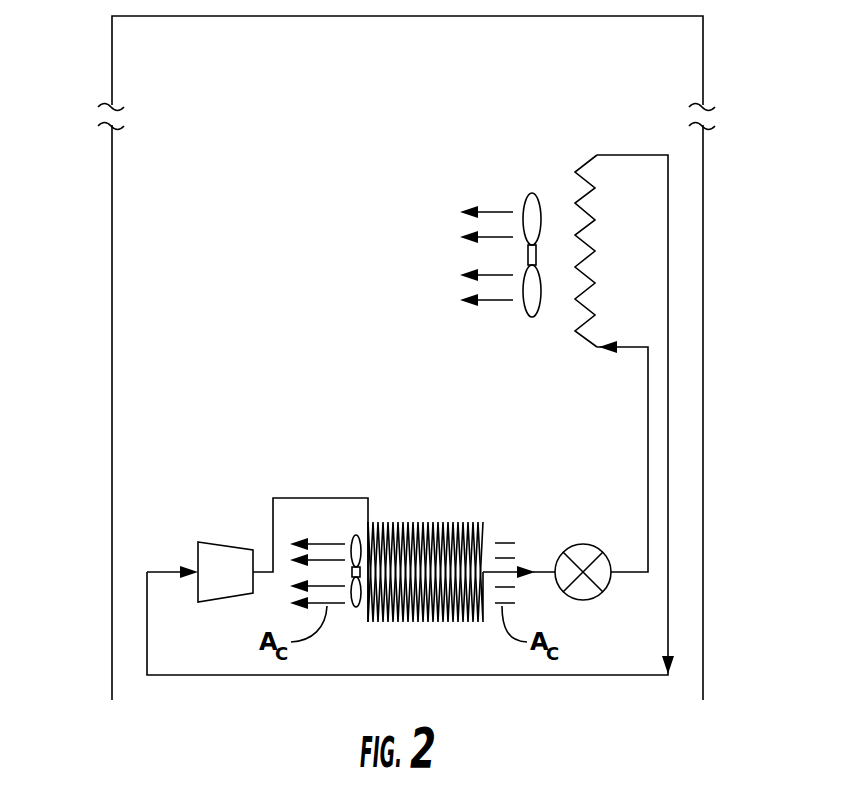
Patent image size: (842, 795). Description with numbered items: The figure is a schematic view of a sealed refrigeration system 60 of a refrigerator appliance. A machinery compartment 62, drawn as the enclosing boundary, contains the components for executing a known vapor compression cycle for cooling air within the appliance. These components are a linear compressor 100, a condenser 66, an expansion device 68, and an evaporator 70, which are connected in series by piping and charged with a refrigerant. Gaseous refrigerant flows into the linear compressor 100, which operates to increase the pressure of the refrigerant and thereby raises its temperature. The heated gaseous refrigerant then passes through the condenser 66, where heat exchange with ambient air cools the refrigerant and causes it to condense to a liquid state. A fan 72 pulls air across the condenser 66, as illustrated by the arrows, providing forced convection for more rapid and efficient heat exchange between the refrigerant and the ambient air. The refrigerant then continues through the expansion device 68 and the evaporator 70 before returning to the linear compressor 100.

The machinery compartment 62 is at (146, 520).
The sealed refrigeration system 60 is at (402, 450).
The condenser 66 is at (451, 522).
The expansion device 68 is at (575, 549).
The evaporator 70 is at (575, 208).
The fan 72 is at (352, 548).
The linear compressor 100 is at (226, 544).